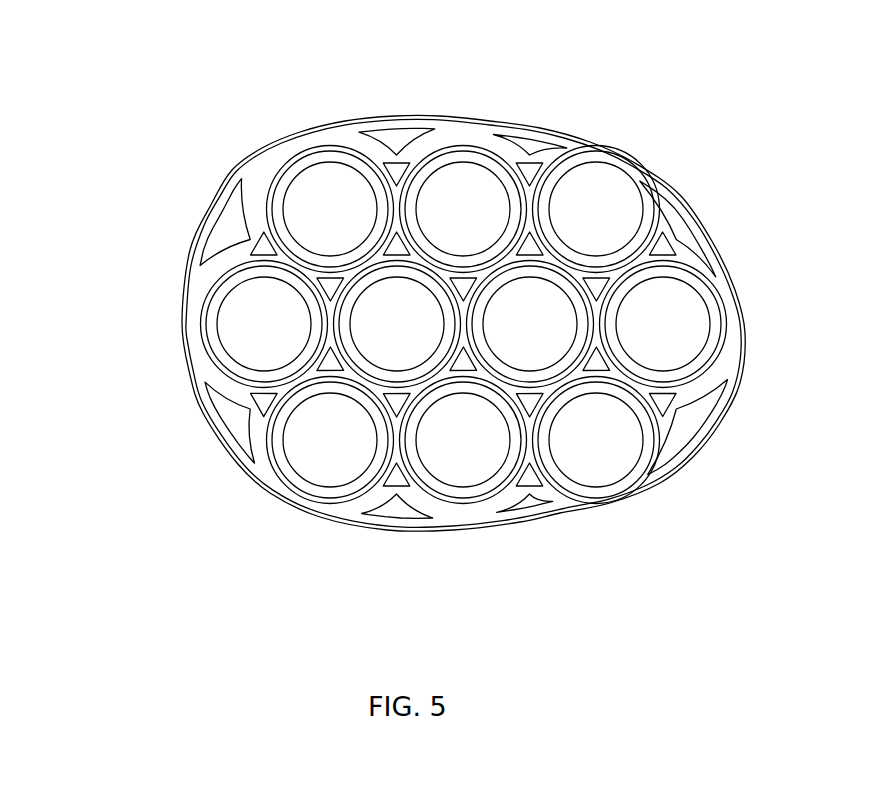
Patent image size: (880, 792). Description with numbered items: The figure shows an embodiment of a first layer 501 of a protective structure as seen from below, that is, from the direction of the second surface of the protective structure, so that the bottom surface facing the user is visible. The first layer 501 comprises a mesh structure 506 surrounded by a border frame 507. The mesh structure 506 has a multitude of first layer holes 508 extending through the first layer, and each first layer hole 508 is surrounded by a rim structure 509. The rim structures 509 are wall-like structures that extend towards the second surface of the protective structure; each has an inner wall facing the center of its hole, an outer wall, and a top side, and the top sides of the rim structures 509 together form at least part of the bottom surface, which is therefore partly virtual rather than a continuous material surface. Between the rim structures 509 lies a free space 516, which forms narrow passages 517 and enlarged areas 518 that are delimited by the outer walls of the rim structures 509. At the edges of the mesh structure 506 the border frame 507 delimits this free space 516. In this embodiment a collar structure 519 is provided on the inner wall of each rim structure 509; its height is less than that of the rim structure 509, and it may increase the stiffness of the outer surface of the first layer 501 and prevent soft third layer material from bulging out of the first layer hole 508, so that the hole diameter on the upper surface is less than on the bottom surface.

The first layer 501 is at (85, 44).
The mesh structure 506 is at (228, 262).
The border frame 507 is at (190, 323).
The first layer hole 508 is at (326, 205).
The rim structure 509 is at (487, 150).
The free space 516 is at (665, 205).
The passage 517 is at (398, 438).
The enlarged area 518 is at (525, 405).
The collar structure 519 is at (452, 158).